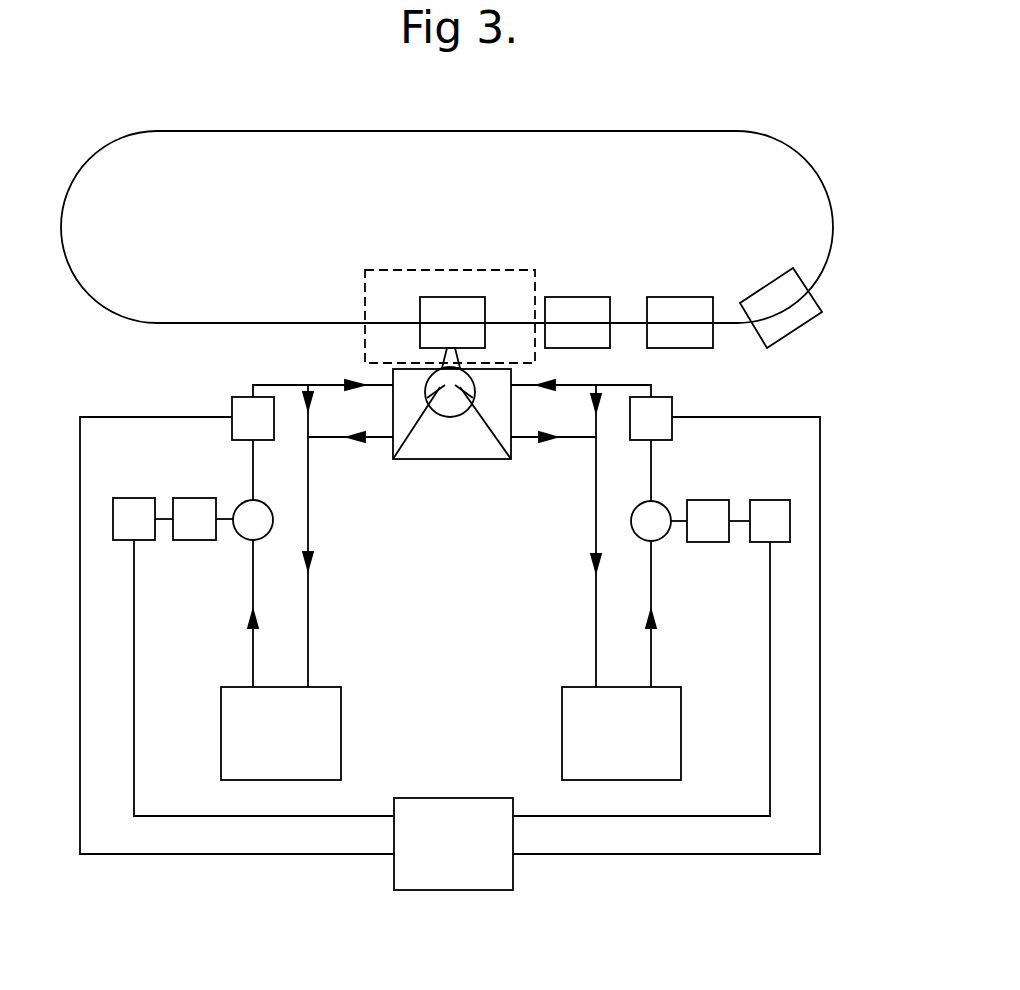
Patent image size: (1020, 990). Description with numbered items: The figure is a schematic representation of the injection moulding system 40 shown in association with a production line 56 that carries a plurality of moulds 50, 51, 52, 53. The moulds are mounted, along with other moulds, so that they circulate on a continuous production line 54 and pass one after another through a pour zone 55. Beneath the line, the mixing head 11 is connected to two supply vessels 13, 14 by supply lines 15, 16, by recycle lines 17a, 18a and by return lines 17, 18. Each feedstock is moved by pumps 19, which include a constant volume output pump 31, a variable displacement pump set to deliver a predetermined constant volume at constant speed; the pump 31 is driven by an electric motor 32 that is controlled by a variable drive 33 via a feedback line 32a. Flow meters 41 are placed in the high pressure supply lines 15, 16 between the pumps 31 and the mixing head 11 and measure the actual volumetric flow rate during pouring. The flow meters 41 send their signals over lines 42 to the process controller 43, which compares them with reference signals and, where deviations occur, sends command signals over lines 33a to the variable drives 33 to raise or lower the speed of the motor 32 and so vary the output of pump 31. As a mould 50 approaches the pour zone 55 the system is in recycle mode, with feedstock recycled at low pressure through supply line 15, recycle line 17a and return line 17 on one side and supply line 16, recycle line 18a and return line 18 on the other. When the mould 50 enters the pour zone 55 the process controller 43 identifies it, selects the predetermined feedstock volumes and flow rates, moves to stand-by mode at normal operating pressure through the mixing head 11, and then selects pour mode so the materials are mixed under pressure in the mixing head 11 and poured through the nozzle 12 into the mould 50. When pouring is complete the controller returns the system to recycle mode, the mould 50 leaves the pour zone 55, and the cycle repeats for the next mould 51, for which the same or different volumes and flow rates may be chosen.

The mixing head 11 is at (442, 460).
The nozzle 12 is at (535, 363).
The supply vessel 13 is at (281, 733).
The supply vessel 14 is at (621, 733).
The supply line 15 is at (325, 383).
The supply line 16 is at (520, 385).
The return line 17 is at (308, 495).
The recycle line 17a is at (325, 460).
The return line 18 is at (596, 495).
The recycle line 18a is at (580, 459).
The pump 19 is at (233, 544).
The constant volume output pump 31 is at (452, 520).
The electric motor 32 is at (451, 520).
The feedback line 32a is at (164, 516).
The variable drive 33 is at (451, 520).
The line 33a is at (308, 854).
The injection moulding system 40 is at (840, 781).
The flow meter 41 is at (452, 418).
The line 42 is at (80, 545).
The process controller 43 is at (453, 844).
The mould 50 is at (453, 308).
The mould 51 is at (577, 307).
The mould 52 is at (674, 310).
The mould 53 is at (772, 297).
The continuous production line 54 is at (262, 133).
The pour zone 55 is at (365, 288).
The production line 56 is at (648, 133).